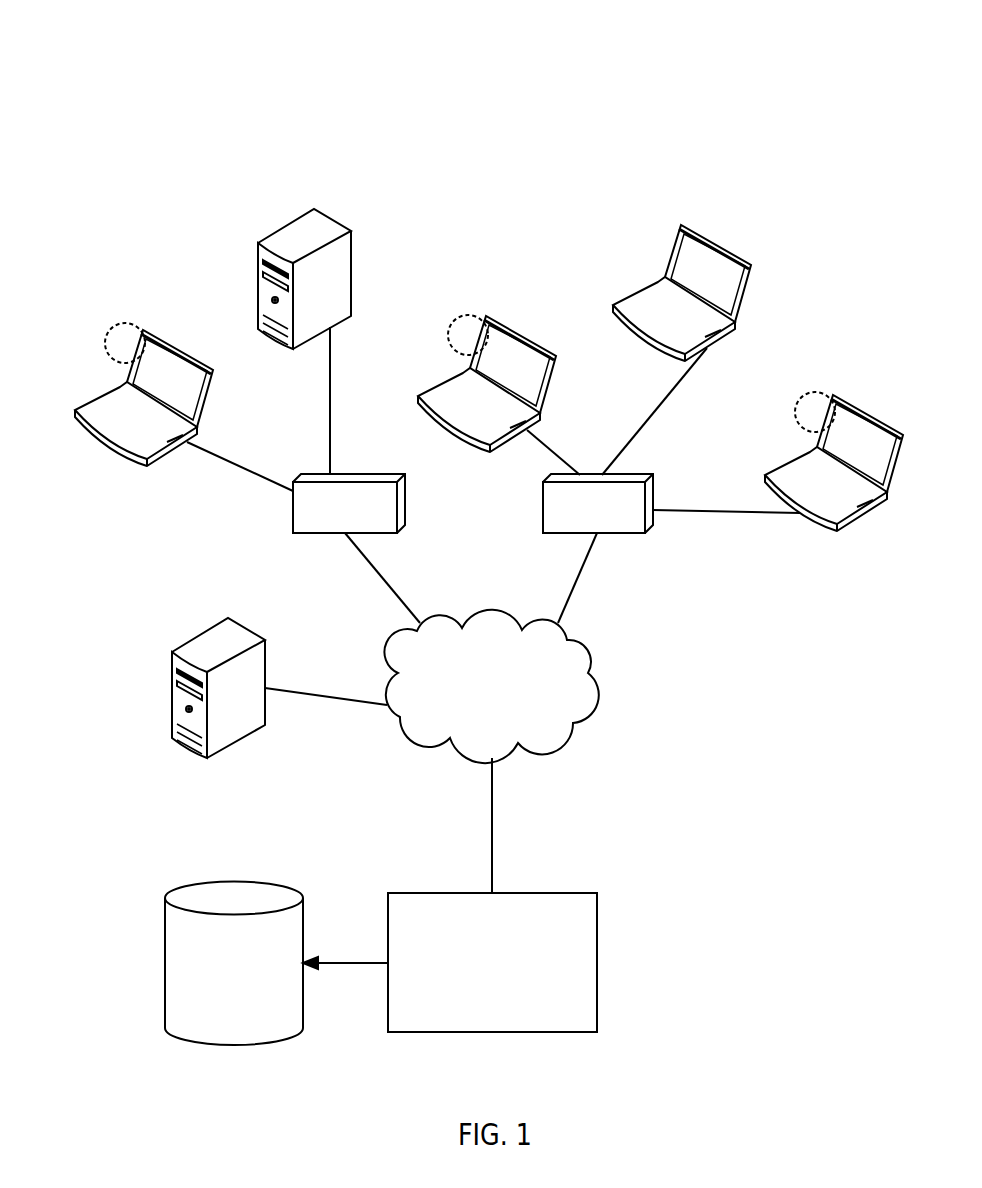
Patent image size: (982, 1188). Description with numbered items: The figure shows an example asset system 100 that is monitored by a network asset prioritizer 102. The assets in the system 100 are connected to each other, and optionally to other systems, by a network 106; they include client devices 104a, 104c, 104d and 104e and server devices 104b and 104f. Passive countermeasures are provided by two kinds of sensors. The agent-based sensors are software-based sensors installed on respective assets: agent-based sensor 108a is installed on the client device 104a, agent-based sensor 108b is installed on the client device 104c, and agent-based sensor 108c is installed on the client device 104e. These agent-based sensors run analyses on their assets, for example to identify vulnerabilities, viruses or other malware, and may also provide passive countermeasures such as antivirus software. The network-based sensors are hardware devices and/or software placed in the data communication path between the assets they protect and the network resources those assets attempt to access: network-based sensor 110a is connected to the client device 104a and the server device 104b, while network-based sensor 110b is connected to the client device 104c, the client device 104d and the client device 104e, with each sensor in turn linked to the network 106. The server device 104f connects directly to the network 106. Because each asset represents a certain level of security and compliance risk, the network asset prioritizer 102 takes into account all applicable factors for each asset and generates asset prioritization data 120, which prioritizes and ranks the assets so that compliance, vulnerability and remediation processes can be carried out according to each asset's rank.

The asset system 100 is at (132, 90).
The network asset prioritizer 102 is at (477, 982).
The client device 104a is at (100, 393).
The server device 104b is at (257, 252).
The client device 104c is at (443, 382).
The client device 104d is at (640, 290).
The client device 104e is at (787, 463).
The server device 104f is at (172, 665).
The network 106 is at (473, 727).
The agent-based sensor 108a is at (117, 325).
The agent-based sensor 108b is at (467, 315).
The agent-based sensor 108c is at (813, 391).
The network-based sensor 110a is at (320, 533).
The network-based sensor 110b is at (627, 533).
The asset prioritization data 120 is at (220, 1023).